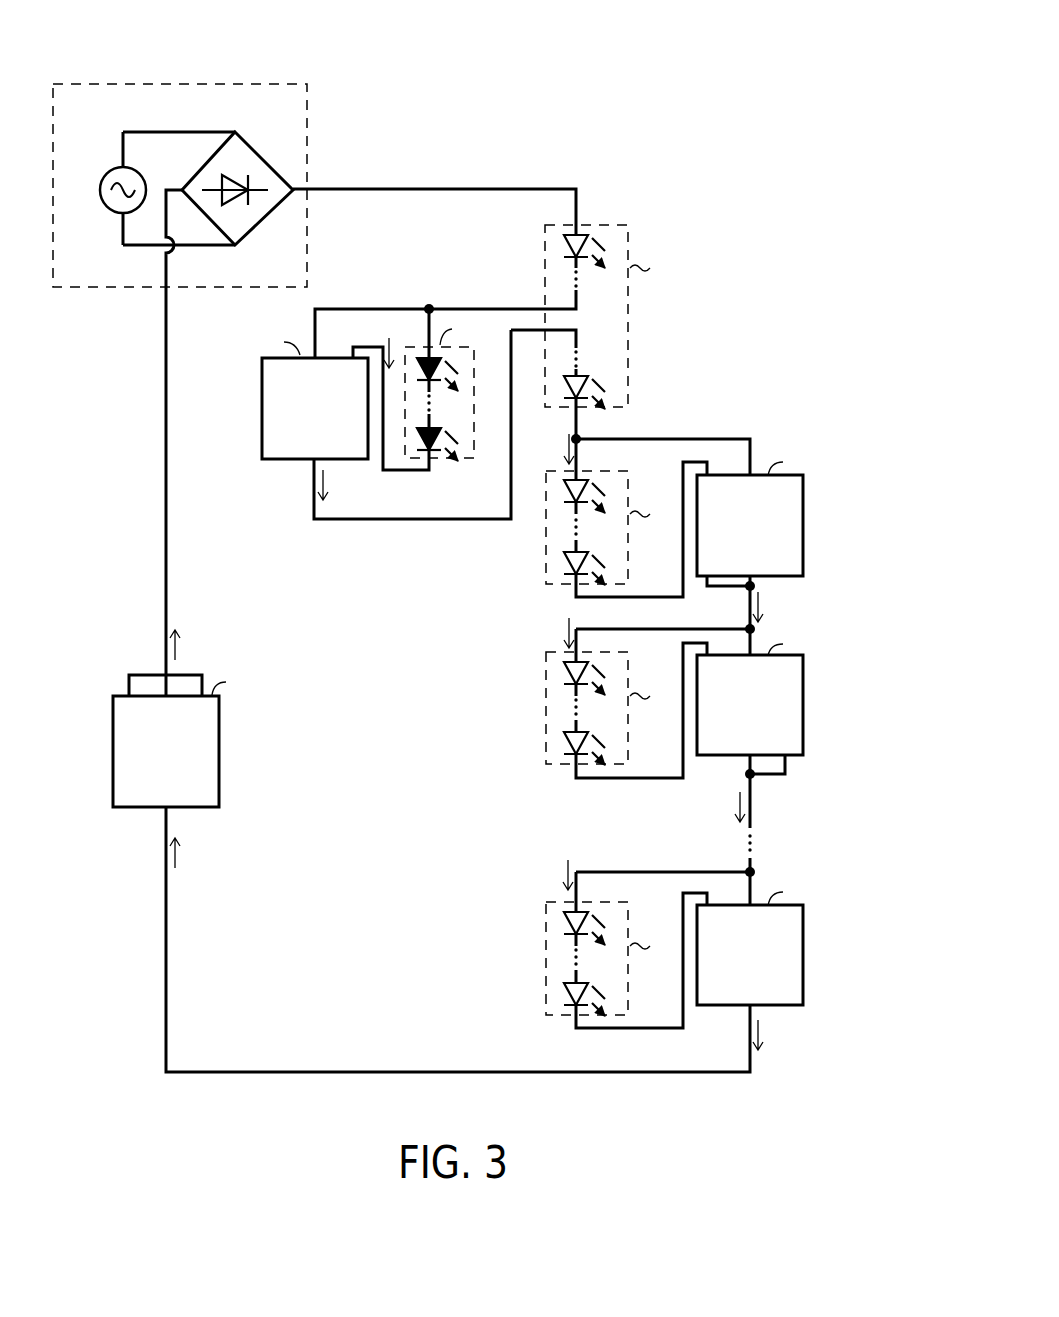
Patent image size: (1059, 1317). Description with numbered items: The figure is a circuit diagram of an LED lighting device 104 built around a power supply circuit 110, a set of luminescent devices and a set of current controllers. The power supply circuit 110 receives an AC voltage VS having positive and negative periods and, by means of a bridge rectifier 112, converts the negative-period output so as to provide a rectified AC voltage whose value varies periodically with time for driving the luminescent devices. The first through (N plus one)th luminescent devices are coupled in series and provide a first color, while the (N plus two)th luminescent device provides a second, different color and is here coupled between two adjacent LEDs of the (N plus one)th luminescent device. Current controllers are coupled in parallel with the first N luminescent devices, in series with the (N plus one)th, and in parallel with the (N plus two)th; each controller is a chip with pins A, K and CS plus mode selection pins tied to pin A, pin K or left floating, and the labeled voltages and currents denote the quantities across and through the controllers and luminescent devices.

The LED driving circuit 104 is at (706, 56).
The power supply circuit 110 is at (170, 85).
The bridge rectifier 112 is at (266, 157).